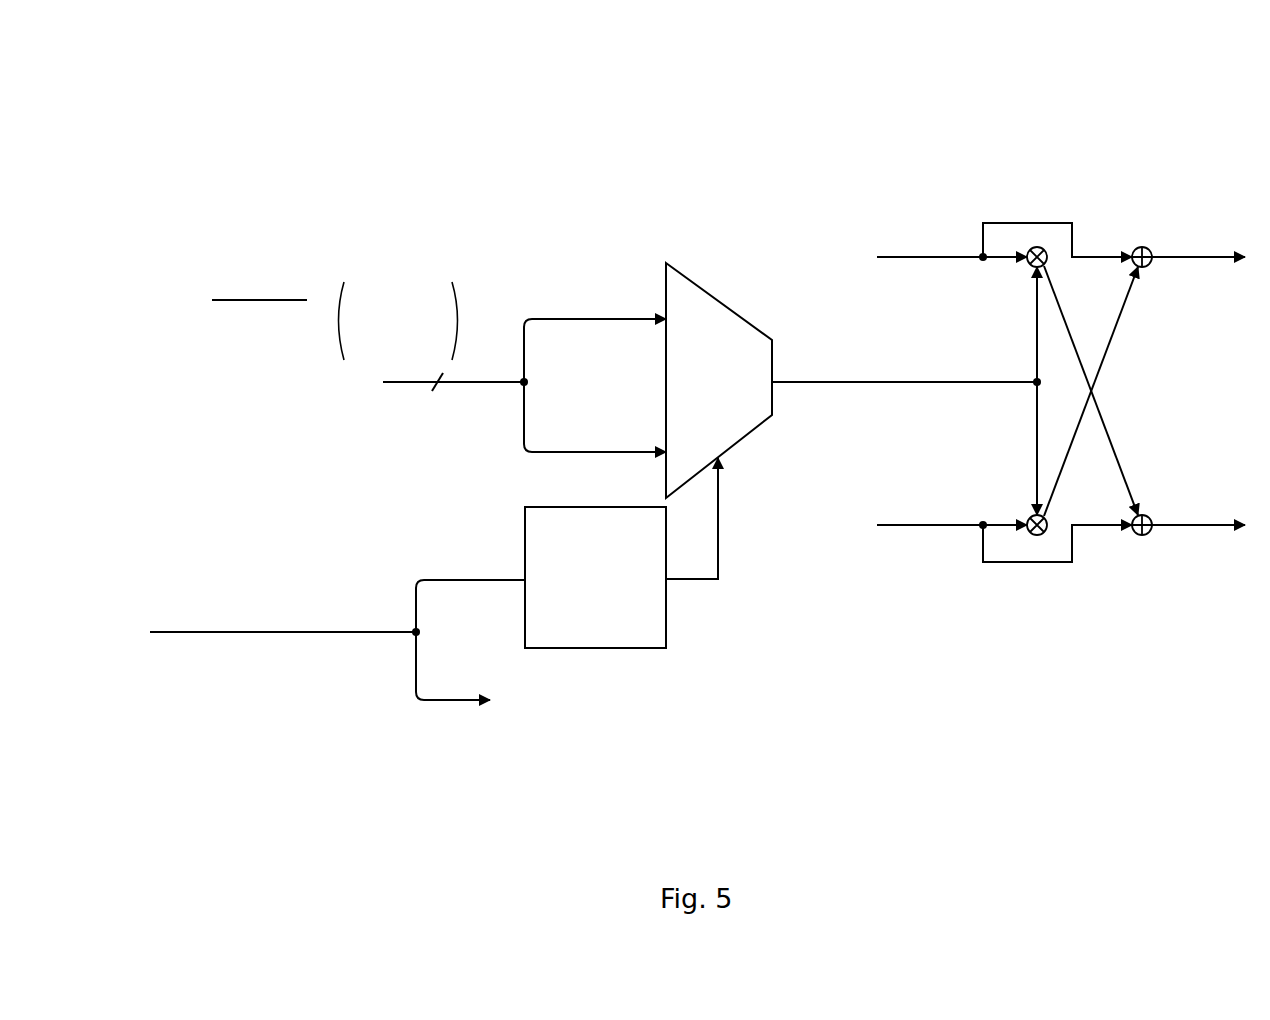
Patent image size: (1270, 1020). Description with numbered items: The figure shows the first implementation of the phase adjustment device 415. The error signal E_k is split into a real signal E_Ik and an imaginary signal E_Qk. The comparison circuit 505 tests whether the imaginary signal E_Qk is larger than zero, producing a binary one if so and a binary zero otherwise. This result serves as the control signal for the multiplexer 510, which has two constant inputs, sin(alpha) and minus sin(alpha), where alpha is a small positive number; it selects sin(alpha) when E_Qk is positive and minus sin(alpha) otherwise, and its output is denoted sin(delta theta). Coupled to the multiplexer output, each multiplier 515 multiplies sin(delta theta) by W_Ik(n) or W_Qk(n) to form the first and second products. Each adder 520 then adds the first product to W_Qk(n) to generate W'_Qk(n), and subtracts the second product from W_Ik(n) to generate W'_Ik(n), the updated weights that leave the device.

The phase adjustment device 415 is at (983, 73).
The comparison circuit 505 is at (596, 650).
The multiplexer 510 is at (741, 278).
The multiplier 515 is at (1030, 266).
The adder 520 is at (1135, 267).